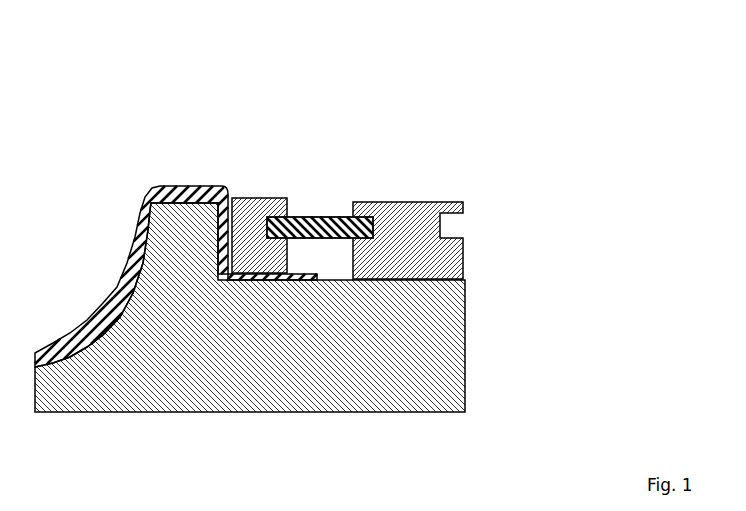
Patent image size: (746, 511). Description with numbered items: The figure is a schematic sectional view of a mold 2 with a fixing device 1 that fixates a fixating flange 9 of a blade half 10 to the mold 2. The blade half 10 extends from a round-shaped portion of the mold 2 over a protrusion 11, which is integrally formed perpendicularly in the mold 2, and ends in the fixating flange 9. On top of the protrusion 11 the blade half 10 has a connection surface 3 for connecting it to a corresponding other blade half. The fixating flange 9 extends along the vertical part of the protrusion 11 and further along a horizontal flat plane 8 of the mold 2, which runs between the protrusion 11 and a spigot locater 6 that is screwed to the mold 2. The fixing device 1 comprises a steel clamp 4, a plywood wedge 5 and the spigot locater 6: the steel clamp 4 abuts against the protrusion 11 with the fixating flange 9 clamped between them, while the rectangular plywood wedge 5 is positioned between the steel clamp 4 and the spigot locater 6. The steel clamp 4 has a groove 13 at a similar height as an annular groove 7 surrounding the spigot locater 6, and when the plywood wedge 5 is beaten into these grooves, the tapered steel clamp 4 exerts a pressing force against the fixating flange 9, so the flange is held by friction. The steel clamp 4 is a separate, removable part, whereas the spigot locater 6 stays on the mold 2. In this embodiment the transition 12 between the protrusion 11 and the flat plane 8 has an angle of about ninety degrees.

The fixing device 1 is at (291, 231).
The mold 2 is at (296, 327).
The connection surface 3 is at (176, 196).
The steel clamp 4 is at (272, 198).
The plywood wedge 5 is at (323, 217).
The spigot locater 6 is at (412, 202).
The annular groove 7 is at (416, 162).
The flat plane 8 is at (337, 278).
The fixating flange 9 is at (240, 200).
The blade half 10 is at (171, 196).
The protrusion 11 is at (143, 197).
The transition 12 is at (210, 292).
The groove 13 is at (320, 131).